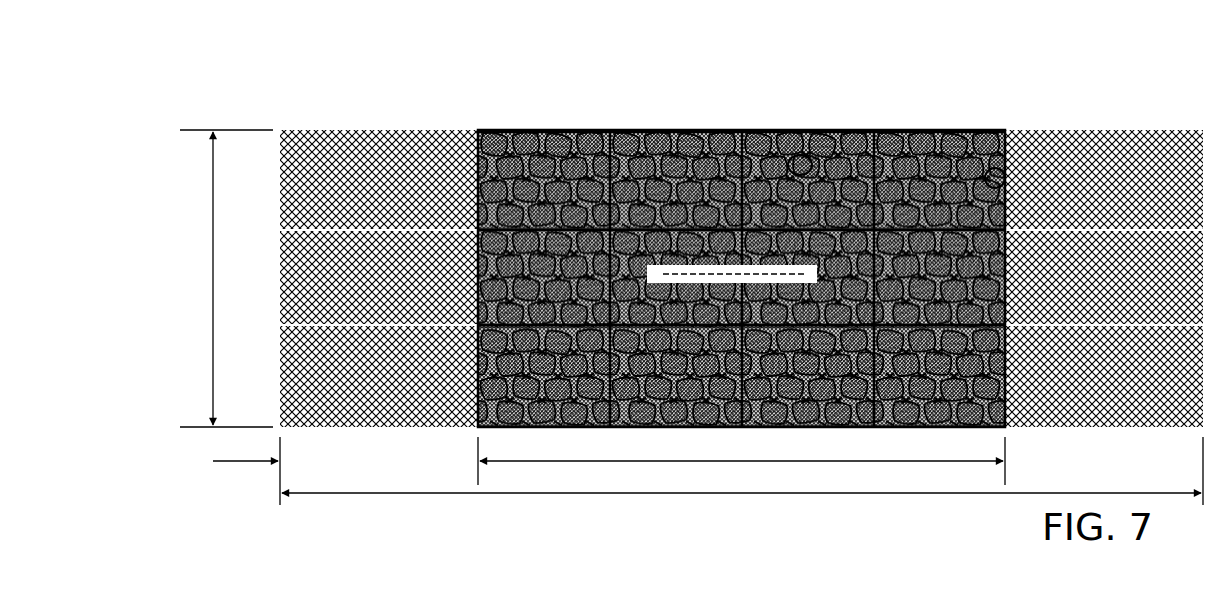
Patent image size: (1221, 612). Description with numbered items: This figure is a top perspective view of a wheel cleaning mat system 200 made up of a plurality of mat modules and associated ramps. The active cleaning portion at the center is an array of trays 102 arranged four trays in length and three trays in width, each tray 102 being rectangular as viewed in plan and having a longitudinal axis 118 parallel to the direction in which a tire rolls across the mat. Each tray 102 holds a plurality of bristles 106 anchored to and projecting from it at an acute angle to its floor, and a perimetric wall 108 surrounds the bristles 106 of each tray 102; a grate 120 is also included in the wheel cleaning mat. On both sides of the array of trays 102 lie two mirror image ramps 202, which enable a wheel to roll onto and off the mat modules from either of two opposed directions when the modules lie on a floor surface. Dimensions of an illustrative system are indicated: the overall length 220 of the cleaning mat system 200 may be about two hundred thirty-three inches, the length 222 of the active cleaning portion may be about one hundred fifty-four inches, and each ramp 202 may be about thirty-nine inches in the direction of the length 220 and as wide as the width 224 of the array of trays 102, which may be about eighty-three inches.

The wheel cleaning mat system 200 is at (689, 274).
The ramp 202 is at (405, 150).
The tray 102 is at (534, 96).
The bristles 106 is at (728, 274).
The perimetric wall 108 is at (800, 158).
The longitudinal axis 118 is at (718, 268).
The grate 120 is at (628, 130).
The overall length 220 is at (812, 496).
The length of active cleaning portion 222 is at (665, 462).
The width of array of trays 224 is at (213, 228).